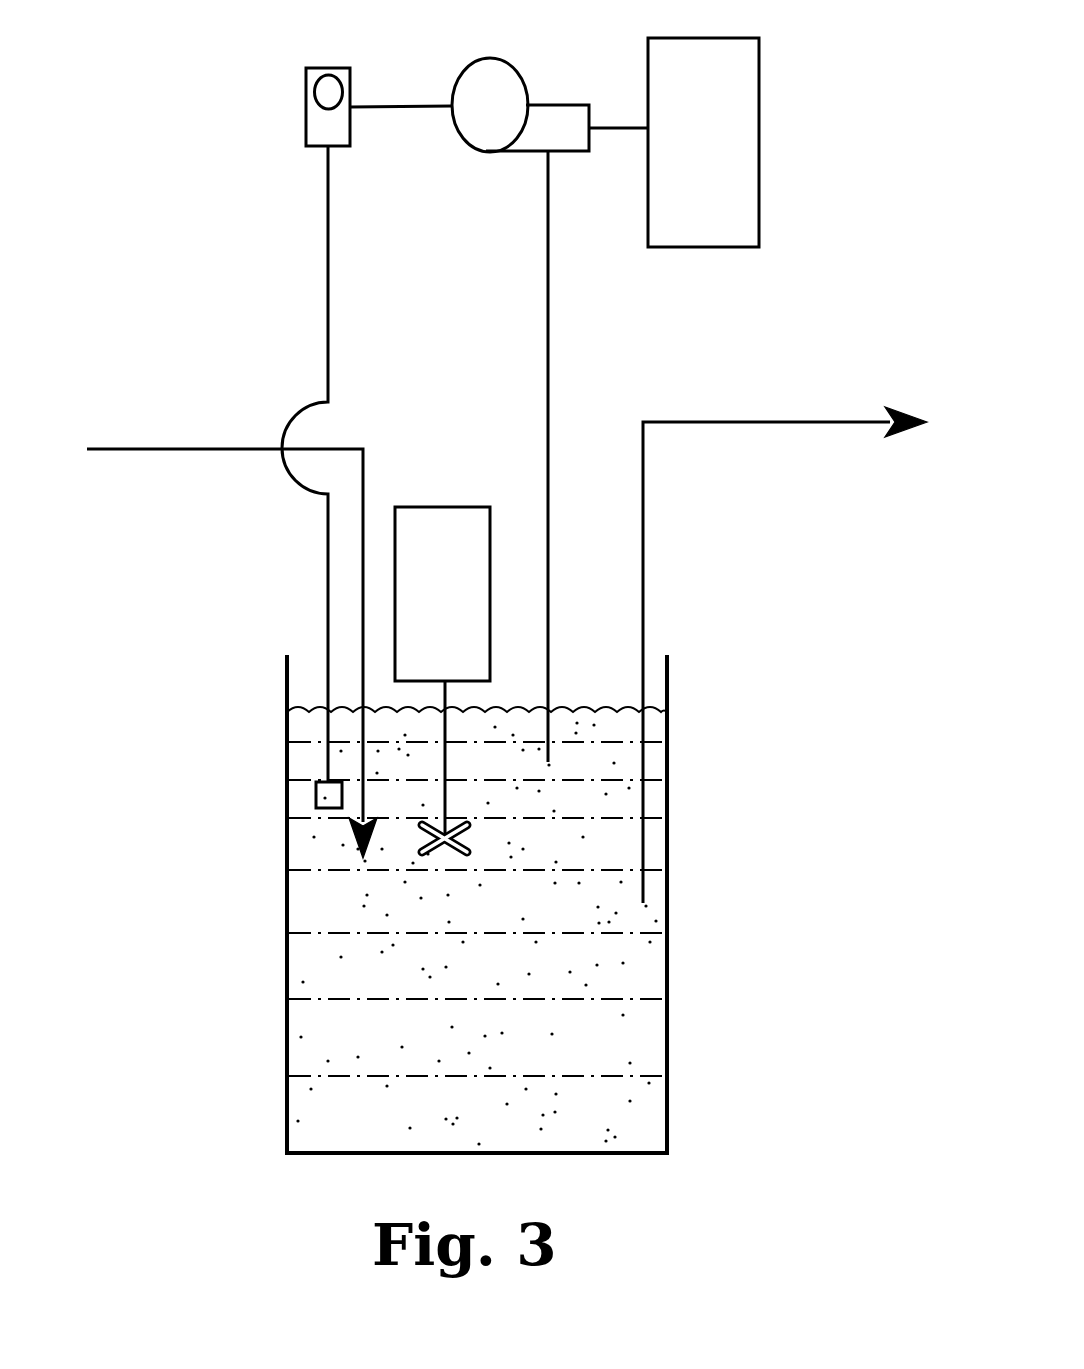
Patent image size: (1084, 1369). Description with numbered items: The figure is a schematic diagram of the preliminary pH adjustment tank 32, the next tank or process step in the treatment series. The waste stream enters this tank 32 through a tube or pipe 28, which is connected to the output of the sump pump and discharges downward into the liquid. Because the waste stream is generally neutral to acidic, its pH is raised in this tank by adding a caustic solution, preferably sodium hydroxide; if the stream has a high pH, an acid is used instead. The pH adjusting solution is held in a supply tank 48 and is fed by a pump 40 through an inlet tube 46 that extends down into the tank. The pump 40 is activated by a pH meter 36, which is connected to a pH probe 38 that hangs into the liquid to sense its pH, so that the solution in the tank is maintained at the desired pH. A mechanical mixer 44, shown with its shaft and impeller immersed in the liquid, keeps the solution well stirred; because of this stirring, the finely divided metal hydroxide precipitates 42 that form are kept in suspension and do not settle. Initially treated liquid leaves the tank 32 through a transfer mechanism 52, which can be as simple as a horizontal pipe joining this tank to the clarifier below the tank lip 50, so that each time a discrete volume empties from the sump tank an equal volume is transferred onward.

The tube or pipe 28 is at (203, 452).
The preliminary pH adjustment tank 32 is at (181, 78).
The pH meter 36 is at (306, 128).
The pH probe 38 is at (328, 276).
The pump 40 is at (475, 128).
The precipitates 42 is at (618, 1105).
The mechanical mixer 44 is at (440, 525).
The inlet tube 46 is at (548, 338).
The supply tank 48 is at (737, 137).
The lip 50 is at (287, 690).
The transfer mechanism 52 is at (763, 420).